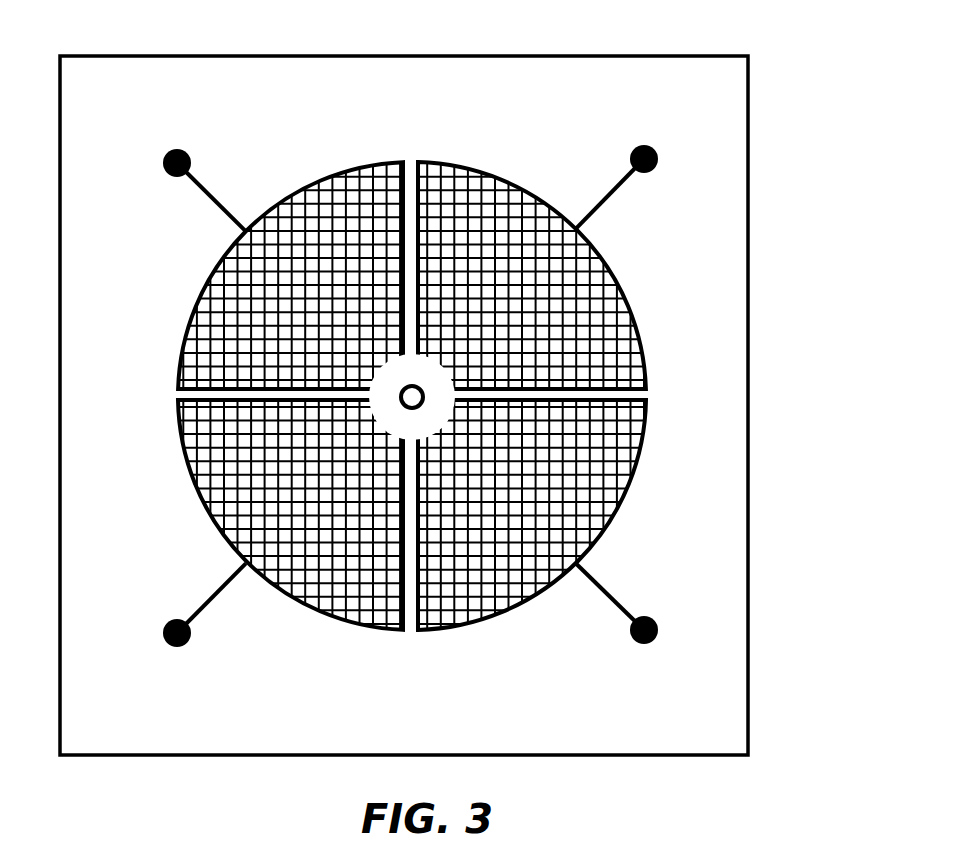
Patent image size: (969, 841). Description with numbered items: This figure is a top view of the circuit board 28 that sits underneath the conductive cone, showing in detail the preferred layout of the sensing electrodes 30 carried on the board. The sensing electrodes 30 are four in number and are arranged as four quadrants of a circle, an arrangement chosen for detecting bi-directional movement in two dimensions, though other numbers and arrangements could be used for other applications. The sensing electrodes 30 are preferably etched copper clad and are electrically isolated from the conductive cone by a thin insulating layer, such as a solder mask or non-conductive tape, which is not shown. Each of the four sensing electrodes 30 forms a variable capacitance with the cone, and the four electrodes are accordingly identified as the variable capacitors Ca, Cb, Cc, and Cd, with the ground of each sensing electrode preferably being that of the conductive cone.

The circuit board 28 is at (753, 703).
The sensing electrodes 30 is at (637, 331).
The variable capacitor Ca is at (617, 172).
The variable capacitor Cb is at (207, 175).
The variable capacitor Cc is at (204, 619).
The variable capacitor Cd is at (616, 618).